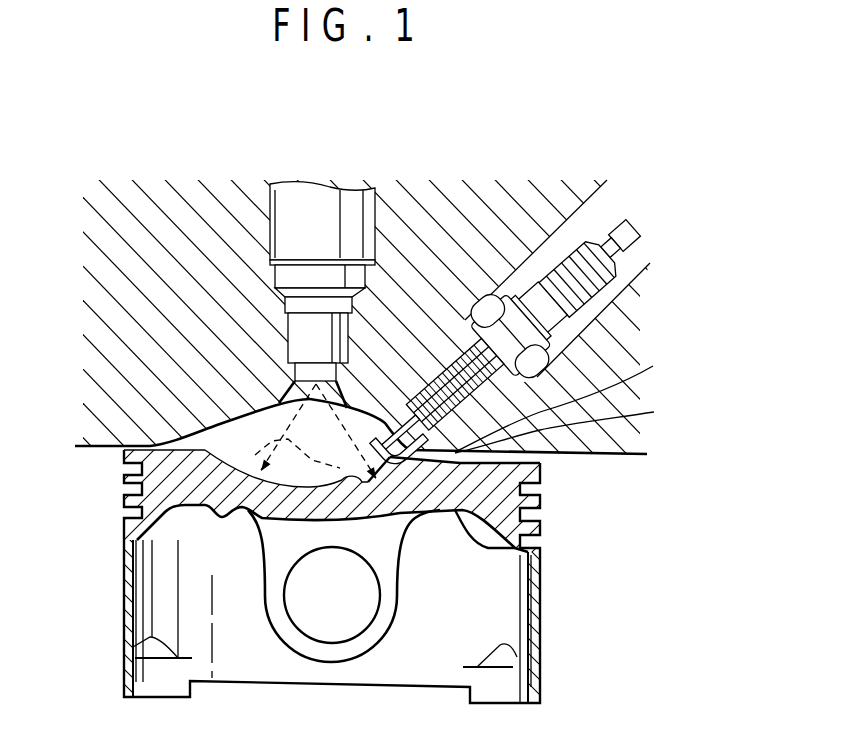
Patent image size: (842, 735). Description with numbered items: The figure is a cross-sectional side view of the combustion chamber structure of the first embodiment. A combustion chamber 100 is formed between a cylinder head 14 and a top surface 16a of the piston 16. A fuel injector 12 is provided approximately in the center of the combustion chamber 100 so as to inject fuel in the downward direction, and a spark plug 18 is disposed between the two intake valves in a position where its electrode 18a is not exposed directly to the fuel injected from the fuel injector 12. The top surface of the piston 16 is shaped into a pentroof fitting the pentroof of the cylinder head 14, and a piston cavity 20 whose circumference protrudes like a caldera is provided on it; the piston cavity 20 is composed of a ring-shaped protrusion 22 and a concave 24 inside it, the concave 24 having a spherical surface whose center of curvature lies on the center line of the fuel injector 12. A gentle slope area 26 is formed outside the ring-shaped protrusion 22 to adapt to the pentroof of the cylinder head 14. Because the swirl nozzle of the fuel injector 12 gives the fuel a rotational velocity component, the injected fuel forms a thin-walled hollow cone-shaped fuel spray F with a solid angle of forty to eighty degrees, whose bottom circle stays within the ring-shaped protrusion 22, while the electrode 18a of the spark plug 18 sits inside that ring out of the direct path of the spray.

The fuel injector 12 is at (320, 205).
The cylinder head 14 is at (220, 186).
The piston 16 is at (540, 634).
The top surface of the piston 16a is at (581, 424).
The spark plug 18 is at (600, 296).
The electrode 18a is at (378, 435).
The piston cavity 20 is at (240, 450).
The ring-shaped protrusion 22 is at (210, 427).
The concave 24 is at (372, 440).
The gentle slope area 26 is at (573, 399).
The combustion chamber 100 is at (275, 410).
The hollow cone-shaped fuel spray F is at (315, 431).